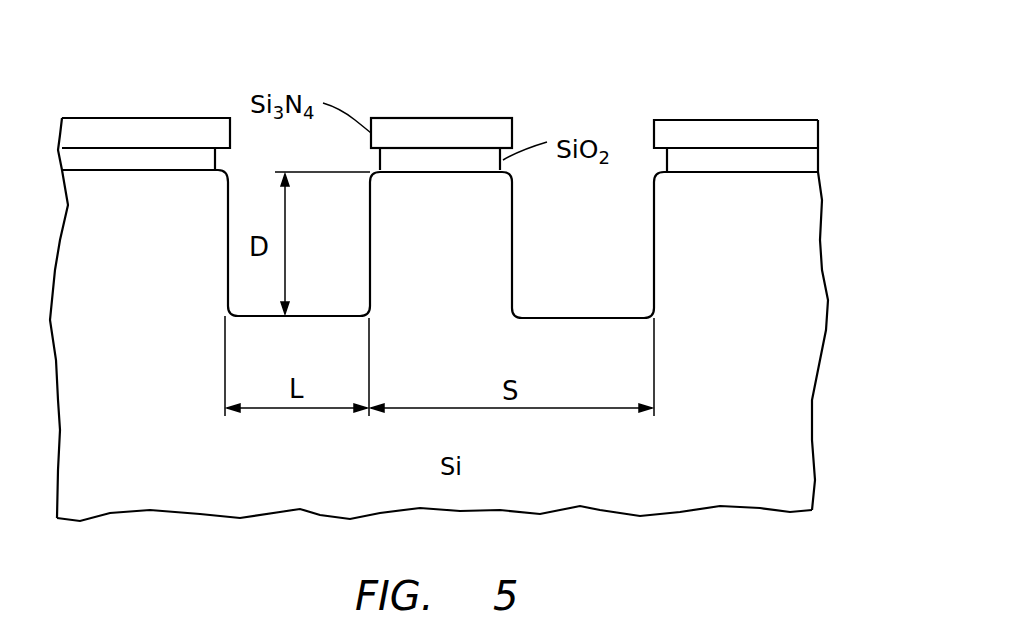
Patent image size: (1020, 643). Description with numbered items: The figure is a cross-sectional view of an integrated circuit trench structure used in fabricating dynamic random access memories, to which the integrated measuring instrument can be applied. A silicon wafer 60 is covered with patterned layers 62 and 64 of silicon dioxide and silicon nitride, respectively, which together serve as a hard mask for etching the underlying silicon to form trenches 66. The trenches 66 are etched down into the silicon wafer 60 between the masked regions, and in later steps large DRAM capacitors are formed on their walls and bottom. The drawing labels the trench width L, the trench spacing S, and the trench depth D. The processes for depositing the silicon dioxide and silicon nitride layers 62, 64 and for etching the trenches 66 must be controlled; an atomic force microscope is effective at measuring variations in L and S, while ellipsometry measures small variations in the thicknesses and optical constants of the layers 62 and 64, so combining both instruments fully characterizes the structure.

The silicon wafer 60 is at (808, 330).
The silicon dioxide layer 62 is at (808, 165).
The silicon nitride layer 64 is at (808, 135).
The trenches 66 is at (345, 258).